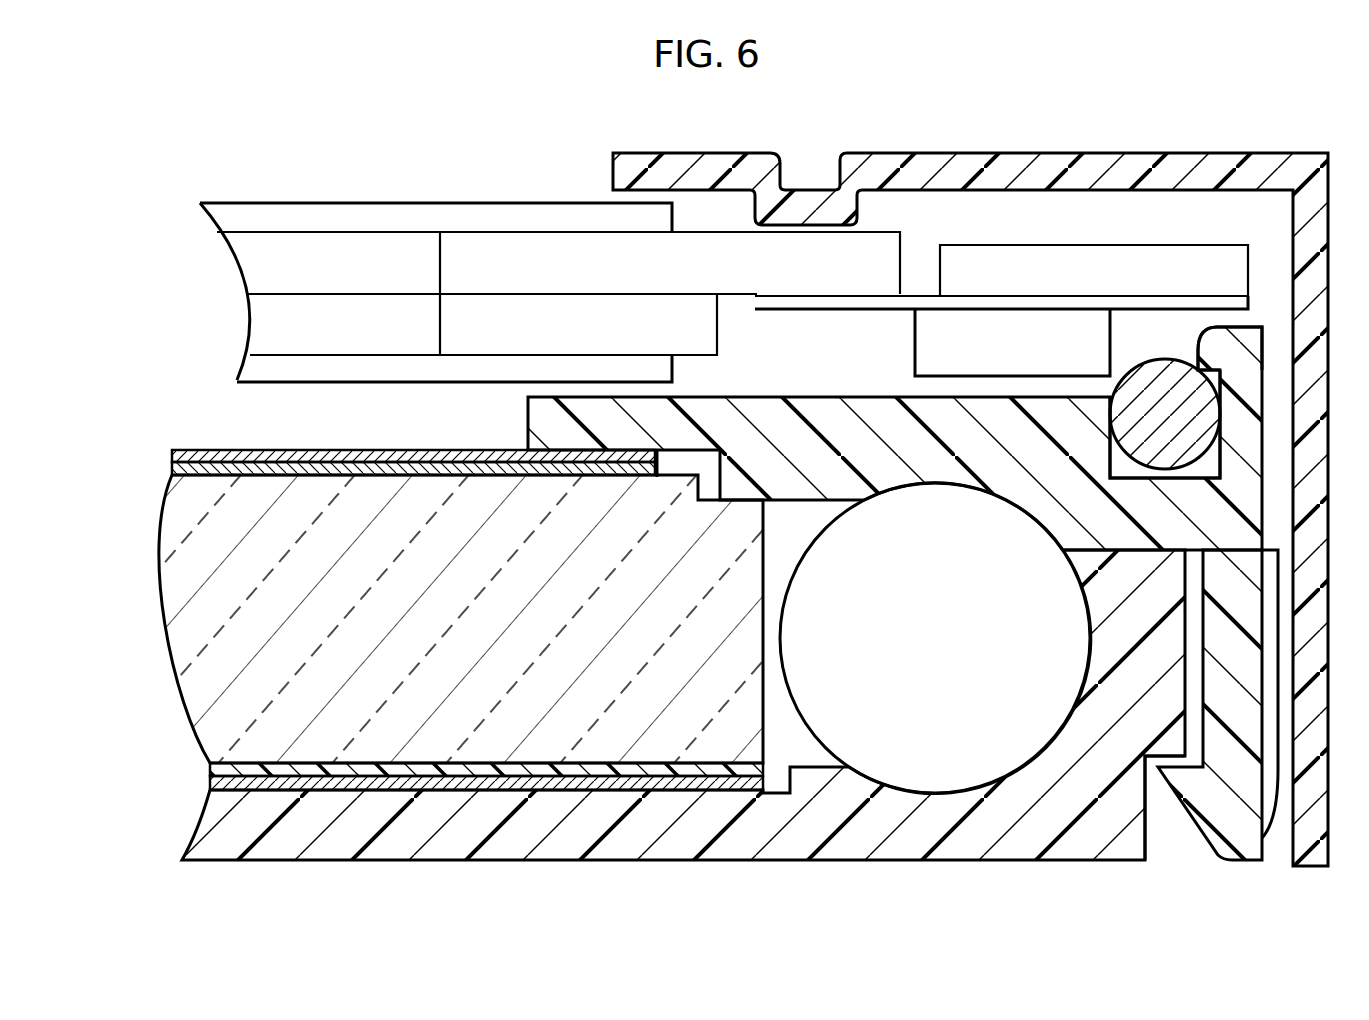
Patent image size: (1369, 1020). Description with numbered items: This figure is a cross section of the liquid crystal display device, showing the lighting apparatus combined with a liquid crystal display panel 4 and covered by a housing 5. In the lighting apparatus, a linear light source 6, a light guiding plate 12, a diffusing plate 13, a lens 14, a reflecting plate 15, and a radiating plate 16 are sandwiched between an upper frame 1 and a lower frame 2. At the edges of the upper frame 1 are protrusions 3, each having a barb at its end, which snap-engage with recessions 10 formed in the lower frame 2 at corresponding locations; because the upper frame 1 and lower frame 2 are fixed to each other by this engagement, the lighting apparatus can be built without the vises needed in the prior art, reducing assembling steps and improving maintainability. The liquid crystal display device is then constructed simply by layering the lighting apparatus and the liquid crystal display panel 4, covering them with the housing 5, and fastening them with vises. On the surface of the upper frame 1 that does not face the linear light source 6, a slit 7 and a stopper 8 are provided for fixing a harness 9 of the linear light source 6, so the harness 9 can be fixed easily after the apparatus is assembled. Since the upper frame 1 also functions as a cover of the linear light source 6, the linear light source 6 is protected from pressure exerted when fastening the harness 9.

The upper frame 1 is at (1240, 528).
The lower frame 2 is at (1053, 832).
The protrusion 3 is at (1233, 800).
The liquid crystal display panel 4 is at (245, 293).
The housing 5 is at (928, 168).
The linear light source 6 is at (942, 795).
The slit 7 is at (1212, 468).
The stopper 8 is at (1245, 356).
The harness 9 is at (1205, 423).
The recession 10 is at (1157, 805).
The light guiding plate 12 is at (200, 698).
The diffusing plate 13 is at (172, 467).
The lens 14 is at (185, 450).
The reflecting plate 15 is at (210, 767).
The radiating plate 16 is at (210, 781).